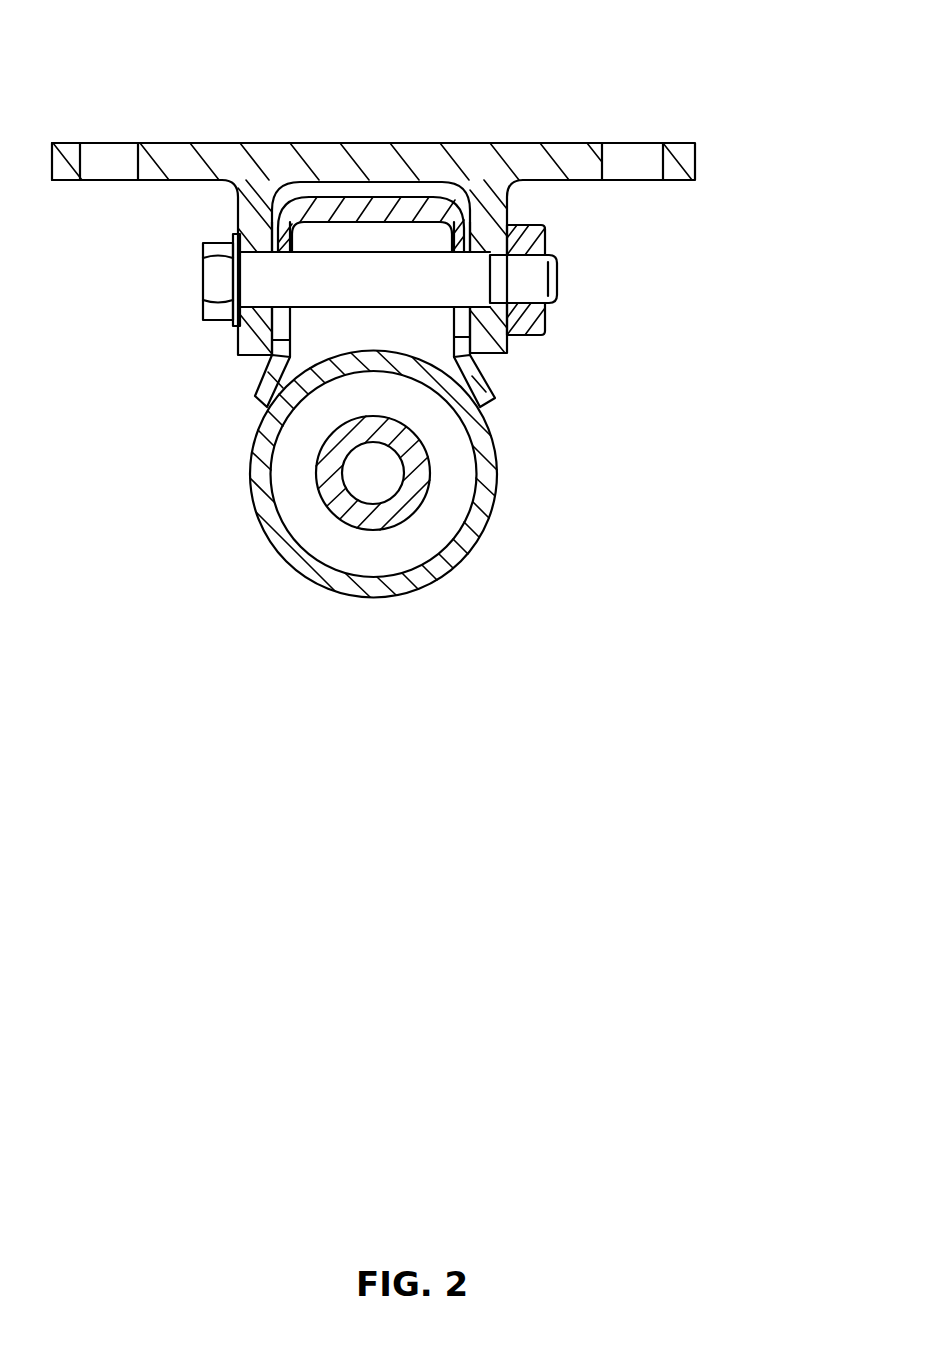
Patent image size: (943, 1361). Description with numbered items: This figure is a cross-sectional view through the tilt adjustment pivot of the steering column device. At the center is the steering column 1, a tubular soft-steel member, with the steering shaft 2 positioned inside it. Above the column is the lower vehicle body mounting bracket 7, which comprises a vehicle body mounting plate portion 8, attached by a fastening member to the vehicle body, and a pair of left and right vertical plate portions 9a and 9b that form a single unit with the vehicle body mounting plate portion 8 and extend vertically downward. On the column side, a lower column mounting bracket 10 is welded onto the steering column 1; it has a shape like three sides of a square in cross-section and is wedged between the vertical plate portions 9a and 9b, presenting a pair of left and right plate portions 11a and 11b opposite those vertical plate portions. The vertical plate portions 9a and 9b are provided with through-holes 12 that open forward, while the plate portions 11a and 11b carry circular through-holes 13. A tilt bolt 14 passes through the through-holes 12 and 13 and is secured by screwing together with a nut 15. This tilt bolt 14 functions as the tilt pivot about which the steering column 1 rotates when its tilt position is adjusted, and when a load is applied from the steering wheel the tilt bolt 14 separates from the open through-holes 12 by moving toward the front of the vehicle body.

The steering column 1 is at (257, 515).
The steering shaft 2 is at (413, 490).
The lower vehicle body mounting bracket 7 is at (558, 142).
The vehicle body mounting plate portion 8 is at (300, 143).
The vertical plate portion 9a is at (495, 363).
The vertical plate portion 9b is at (262, 352).
The lower column mounting bracket 10 is at (393, 195).
The plate portion 11a is at (490, 402).
The plate portion 11b is at (253, 393).
The through-hole 12 is at (203, 278).
The circular through-hole 13 is at (493, 278).
The tilt bolt 14 is at (203, 290).
The nut 15 is at (547, 230).